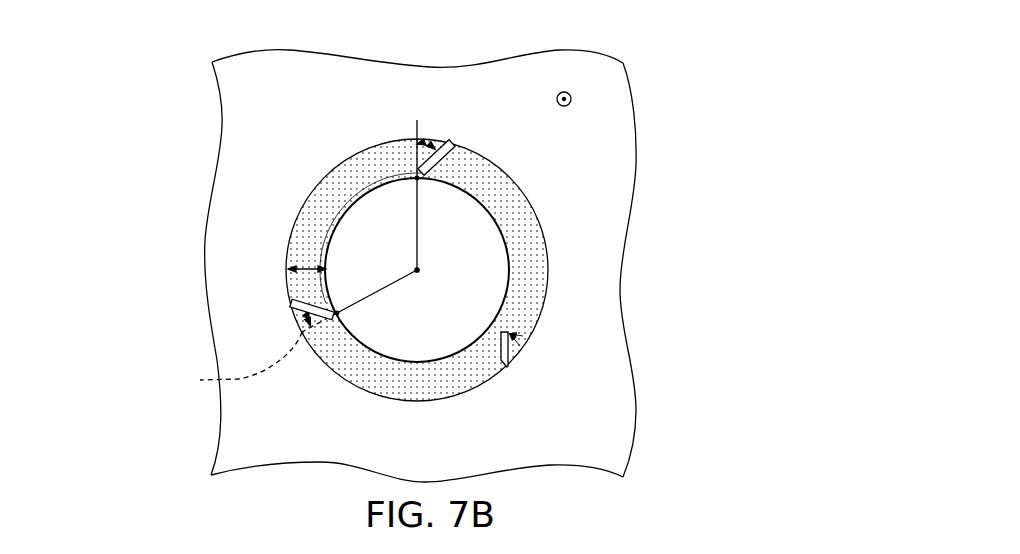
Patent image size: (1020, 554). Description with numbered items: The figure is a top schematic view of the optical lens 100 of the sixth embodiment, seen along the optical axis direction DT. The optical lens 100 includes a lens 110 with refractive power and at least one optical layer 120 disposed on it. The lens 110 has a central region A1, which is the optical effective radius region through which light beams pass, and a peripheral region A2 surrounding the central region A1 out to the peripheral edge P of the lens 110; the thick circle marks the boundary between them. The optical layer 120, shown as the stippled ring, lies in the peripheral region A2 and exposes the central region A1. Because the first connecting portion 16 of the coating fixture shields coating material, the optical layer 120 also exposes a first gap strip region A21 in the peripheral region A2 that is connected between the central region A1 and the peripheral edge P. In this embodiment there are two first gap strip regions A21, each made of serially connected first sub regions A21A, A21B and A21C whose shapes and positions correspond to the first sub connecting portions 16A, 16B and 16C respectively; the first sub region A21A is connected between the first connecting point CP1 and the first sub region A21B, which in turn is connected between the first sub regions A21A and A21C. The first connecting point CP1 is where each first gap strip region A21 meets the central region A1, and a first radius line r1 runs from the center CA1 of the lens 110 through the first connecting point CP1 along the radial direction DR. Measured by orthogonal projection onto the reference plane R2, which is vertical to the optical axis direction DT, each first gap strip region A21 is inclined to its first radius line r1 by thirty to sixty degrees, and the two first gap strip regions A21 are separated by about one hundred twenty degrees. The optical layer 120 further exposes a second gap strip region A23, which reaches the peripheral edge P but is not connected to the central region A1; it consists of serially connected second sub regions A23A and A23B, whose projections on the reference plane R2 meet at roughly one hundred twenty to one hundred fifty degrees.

The optical lens 100 is at (687, 517).
The peripheral edge P is at (541, 212).
The reference plane R2 is at (222, 113).
The optical layer 120 is at (537, 248).
The lens 110 is at (542, 320).
The central region A1 is at (447, 340).
The peripheral region A2 is at (317, 258).
The first radius line r1 is at (400, 186).
The radial direction DR is at (377, 220).
The center of the lens CA1 is at (437, 274).
The first gap strip region A21 is at (496, 28).
The first sub region A21A is at (412, 171).
The first sub region A21B is at (420, 162).
The first sub region A21C is at (461, 147).
The first connecting point CP1 is at (430, 177).
The first connecting portion 16 is at (143, 232).
The first sub connecting portion 16A is at (290, 293).
The first sub connecting portion 16B is at (300, 293).
The first sub connecting portion 16C is at (332, 312).
The second gap strip region A23 is at (700, 372).
The second sub region A23A is at (504, 369).
The second sub region A23B is at (513, 335).
The optical axis direction DT is at (578, 99).